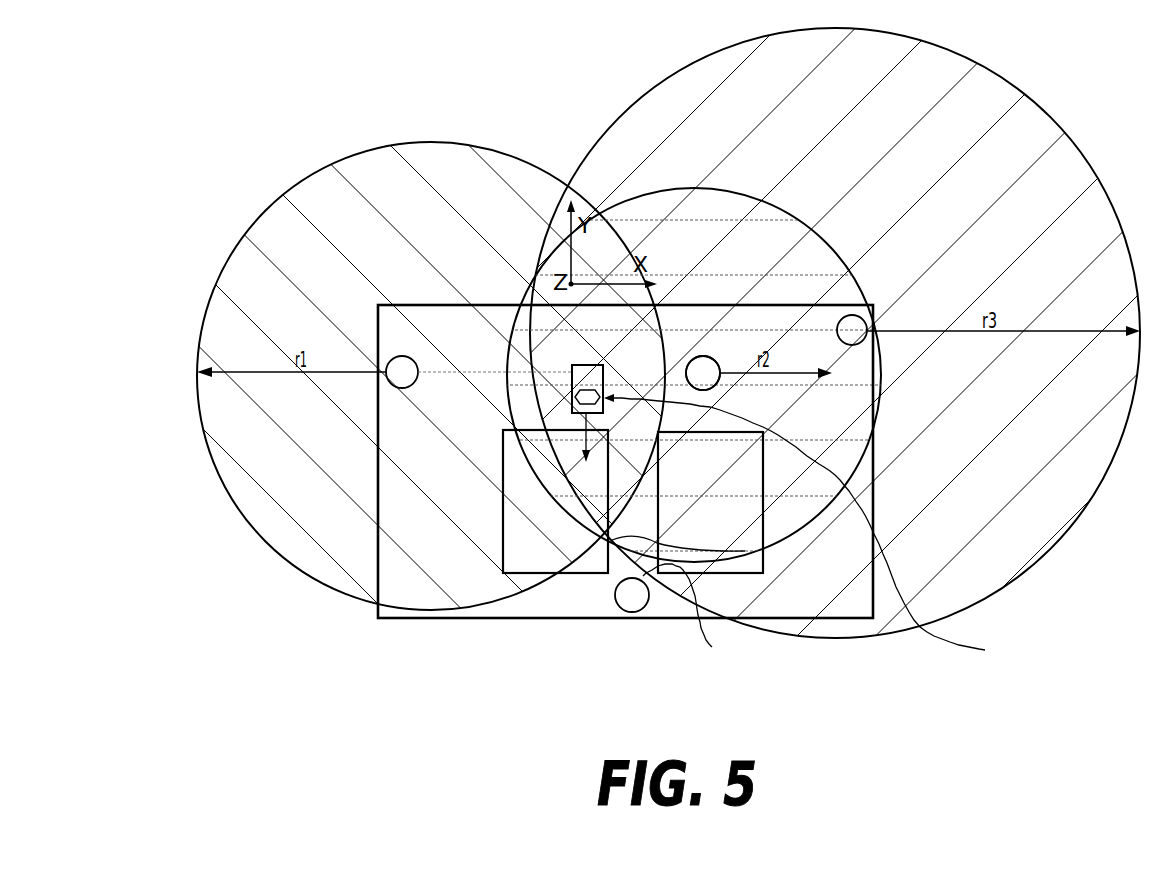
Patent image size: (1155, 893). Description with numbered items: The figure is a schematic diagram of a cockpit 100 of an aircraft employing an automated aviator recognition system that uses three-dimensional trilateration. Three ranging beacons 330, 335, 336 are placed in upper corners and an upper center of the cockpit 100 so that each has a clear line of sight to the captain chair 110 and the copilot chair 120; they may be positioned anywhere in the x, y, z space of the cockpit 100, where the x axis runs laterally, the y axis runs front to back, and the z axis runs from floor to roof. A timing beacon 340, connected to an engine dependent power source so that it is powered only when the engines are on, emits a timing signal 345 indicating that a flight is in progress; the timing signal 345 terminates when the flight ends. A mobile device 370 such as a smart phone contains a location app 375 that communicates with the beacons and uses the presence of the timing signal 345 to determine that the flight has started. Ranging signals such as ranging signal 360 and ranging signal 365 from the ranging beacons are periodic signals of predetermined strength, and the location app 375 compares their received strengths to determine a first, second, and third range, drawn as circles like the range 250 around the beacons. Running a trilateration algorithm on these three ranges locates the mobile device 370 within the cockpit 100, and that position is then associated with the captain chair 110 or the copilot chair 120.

The cockpit 100 is at (378, 586).
The captain chair 110 is at (503, 525).
The copilot chair 120 is at (767, 520).
The first coverage region 250 is at (318, 374).
The ranging beacon 330 is at (699, 200).
The ranging beacon 335 is at (403, 389).
The ranging beacon 336 is at (837, 333).
The timing beacon 340 is at (632, 613).
The timing signal 345 is at (712, 647).
The ranging signal 360 is at (757, 378).
The ranging signal 365 is at (1052, 341).
The mobile device 370 is at (700, 333).
The location app 375 is at (813, 530).